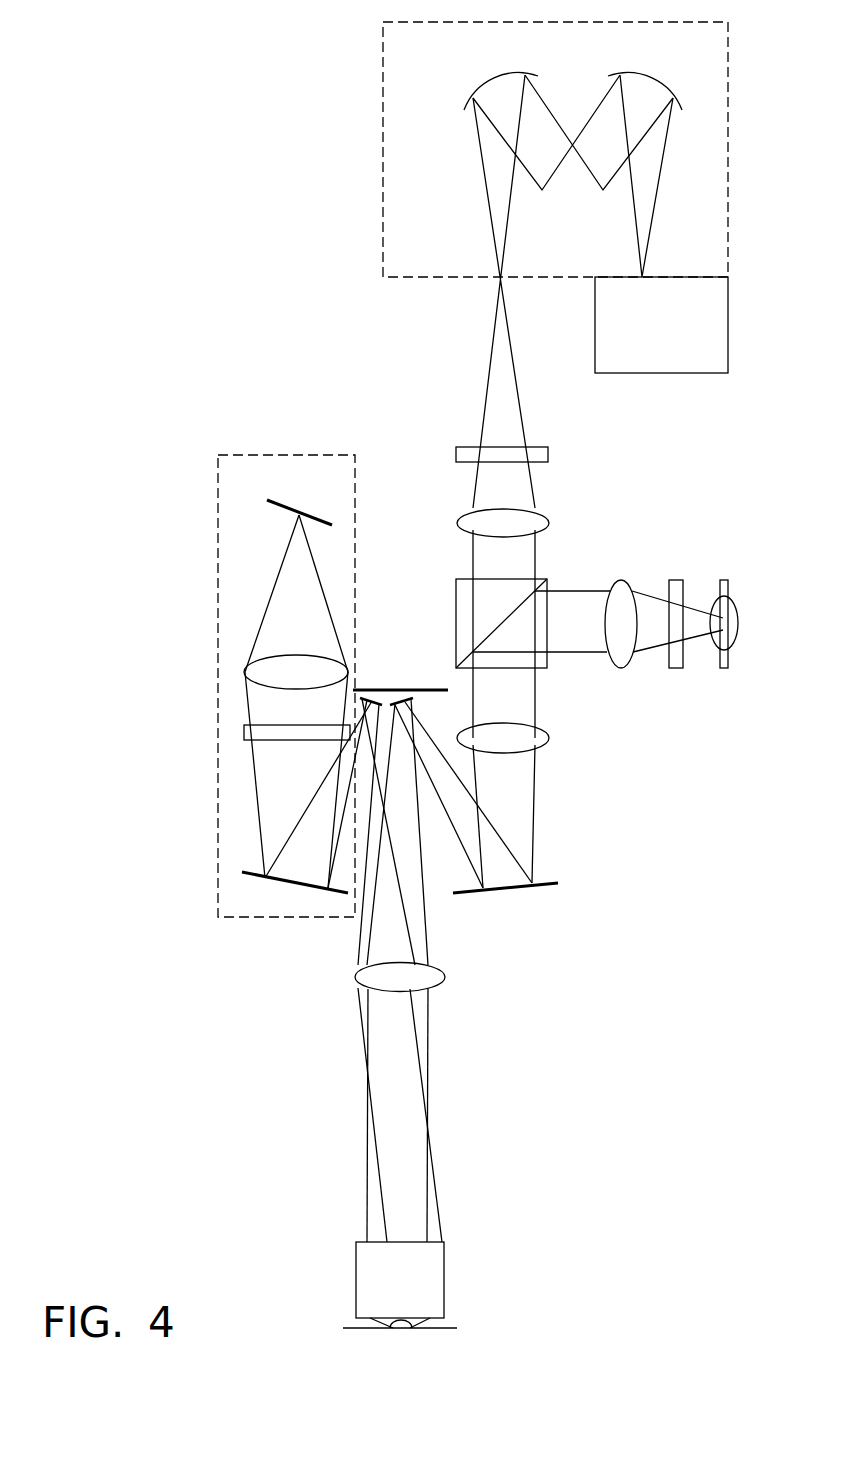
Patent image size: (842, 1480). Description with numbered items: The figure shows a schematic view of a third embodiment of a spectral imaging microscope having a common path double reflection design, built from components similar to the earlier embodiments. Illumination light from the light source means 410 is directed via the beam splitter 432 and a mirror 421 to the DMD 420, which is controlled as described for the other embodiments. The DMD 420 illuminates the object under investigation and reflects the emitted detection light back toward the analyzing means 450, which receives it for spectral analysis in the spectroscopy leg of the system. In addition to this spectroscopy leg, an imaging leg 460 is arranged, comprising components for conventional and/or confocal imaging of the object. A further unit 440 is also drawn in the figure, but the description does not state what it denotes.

The light source means 410 is at (808, 633).
The DMD 420 is at (408, 687).
The mirror 421 is at (513, 890).
The beam splitter 432 is at (456, 630).
The detector 440 is at (537, 1308).
The analyzing means 450 is at (801, 166).
The imaging leg 460 is at (320, 443).